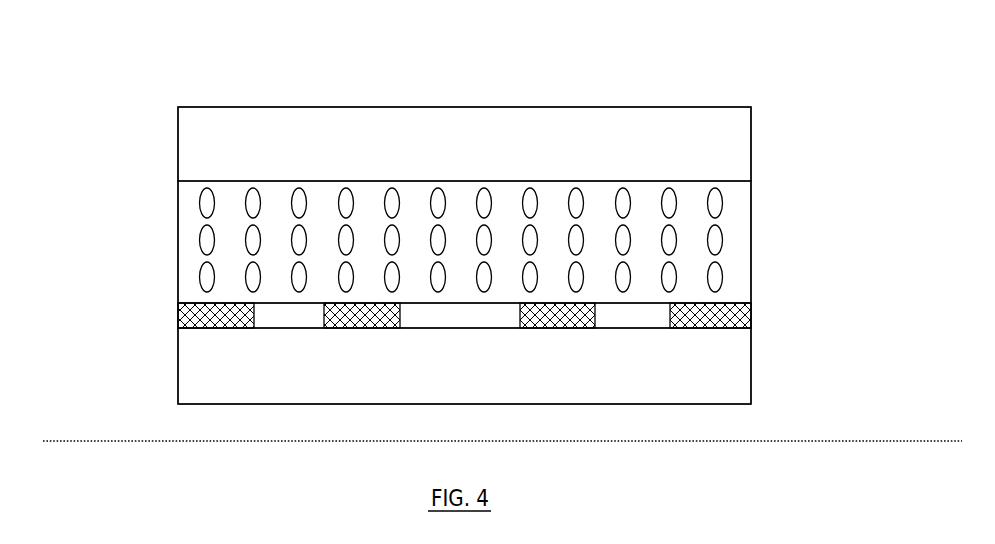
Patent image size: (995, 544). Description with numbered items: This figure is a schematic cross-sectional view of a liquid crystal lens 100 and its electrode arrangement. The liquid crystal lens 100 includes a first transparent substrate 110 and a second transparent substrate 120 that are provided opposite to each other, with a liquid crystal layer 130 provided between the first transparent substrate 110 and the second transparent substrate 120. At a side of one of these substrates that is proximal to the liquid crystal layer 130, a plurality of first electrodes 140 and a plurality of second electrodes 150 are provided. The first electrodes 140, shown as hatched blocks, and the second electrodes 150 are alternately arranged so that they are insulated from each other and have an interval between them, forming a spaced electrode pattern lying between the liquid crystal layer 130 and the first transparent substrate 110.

The liquid crystal lens 100 is at (940, 39).
The first transparent substrate 110 is at (752, 368).
The second transparent substrate 120 is at (751, 157).
The liquid crystal layer 130 is at (738, 252).
The first electrode 140 is at (178, 330).
The second electrode 150 is at (742, 315).